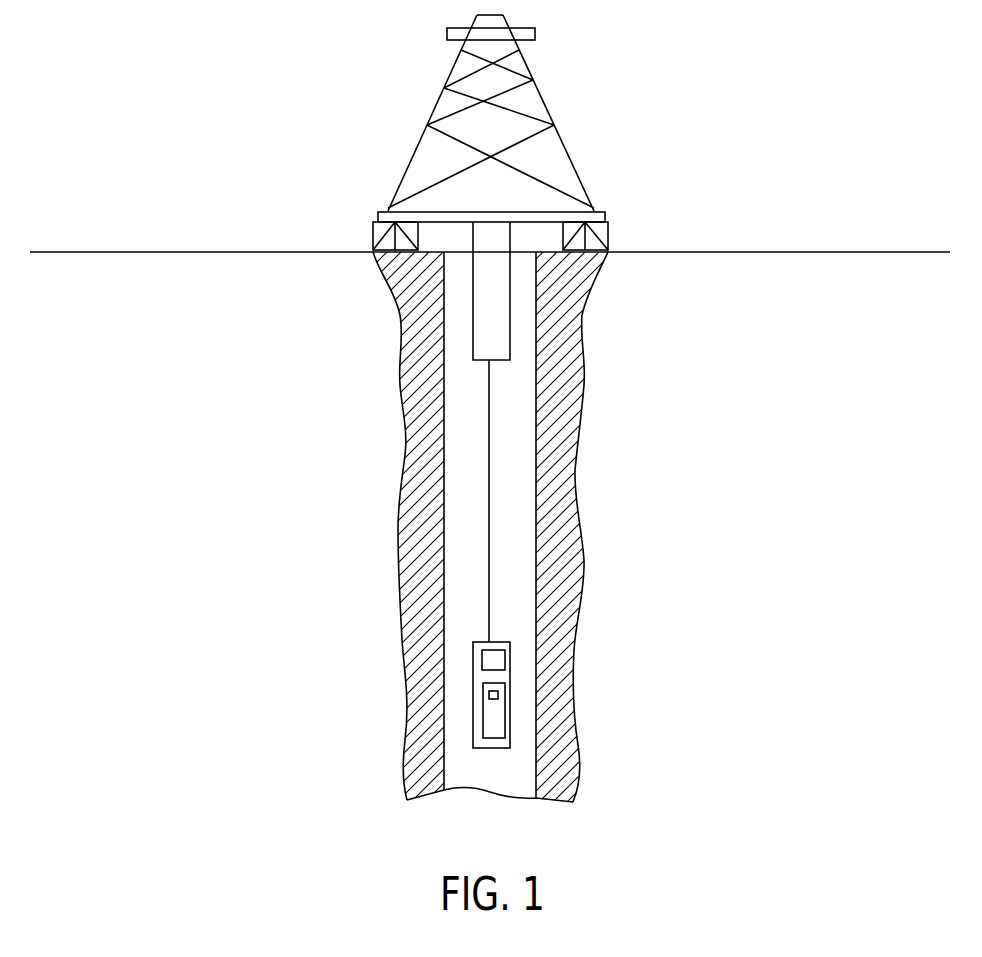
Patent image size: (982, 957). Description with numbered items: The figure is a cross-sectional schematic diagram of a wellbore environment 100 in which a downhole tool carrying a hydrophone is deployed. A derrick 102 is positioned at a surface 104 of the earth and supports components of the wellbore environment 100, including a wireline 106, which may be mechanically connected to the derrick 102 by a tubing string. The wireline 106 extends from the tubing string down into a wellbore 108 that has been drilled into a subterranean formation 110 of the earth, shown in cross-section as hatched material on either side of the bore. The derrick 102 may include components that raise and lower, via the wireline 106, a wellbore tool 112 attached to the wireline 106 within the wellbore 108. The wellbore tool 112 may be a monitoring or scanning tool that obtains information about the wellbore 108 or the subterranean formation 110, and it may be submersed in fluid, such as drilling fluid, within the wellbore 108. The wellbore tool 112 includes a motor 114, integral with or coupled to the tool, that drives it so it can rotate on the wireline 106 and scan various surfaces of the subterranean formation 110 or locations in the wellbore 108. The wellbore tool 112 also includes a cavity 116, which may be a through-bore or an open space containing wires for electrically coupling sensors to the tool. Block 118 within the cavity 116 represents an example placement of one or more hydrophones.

The wellbore environment 100 is at (295, 103).
The derrick 102 is at (527, 63).
The surface 104 is at (173, 251).
The wireline 106 is at (491, 600).
The wellbore 108 is at (477, 395).
The subterranean formation 110 is at (572, 348).
The wellbore tool 112 is at (473, 747).
The motor 114 is at (505, 660).
The cavity 116 is at (483, 683).
The block representing hydrophone placement 118 is at (500, 697).